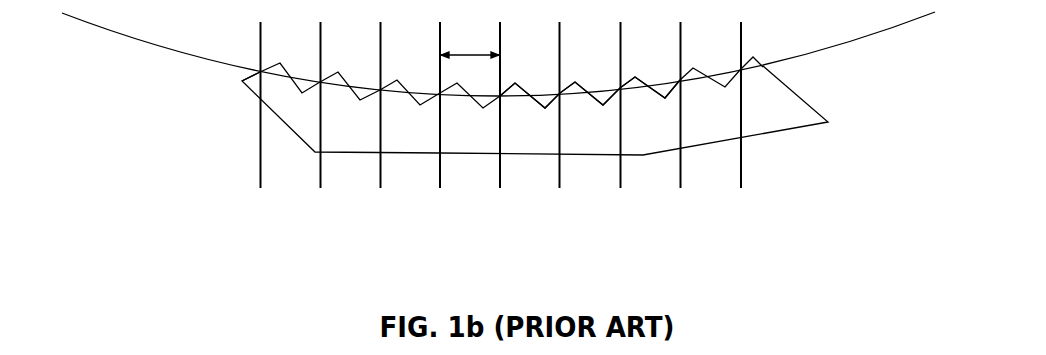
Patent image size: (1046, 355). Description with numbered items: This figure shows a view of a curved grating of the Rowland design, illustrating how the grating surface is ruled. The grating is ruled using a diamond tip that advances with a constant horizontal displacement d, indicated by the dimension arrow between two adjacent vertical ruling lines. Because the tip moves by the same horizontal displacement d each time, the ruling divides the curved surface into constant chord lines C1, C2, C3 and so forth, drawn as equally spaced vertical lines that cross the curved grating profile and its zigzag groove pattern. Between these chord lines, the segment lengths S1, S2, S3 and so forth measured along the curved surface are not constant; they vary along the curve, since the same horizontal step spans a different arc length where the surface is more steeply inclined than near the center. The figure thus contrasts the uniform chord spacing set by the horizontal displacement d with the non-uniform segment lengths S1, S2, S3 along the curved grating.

The segment length S1 is at (530, 77).
The segment length S2 is at (590, 75).
The segment length S3 is at (650, 70).
The chord line C1 is at (495, 125).
The chord line C2 is at (556, 125).
The chord line C3 is at (621, 125).
The horizontal displacement d is at (470, 41).